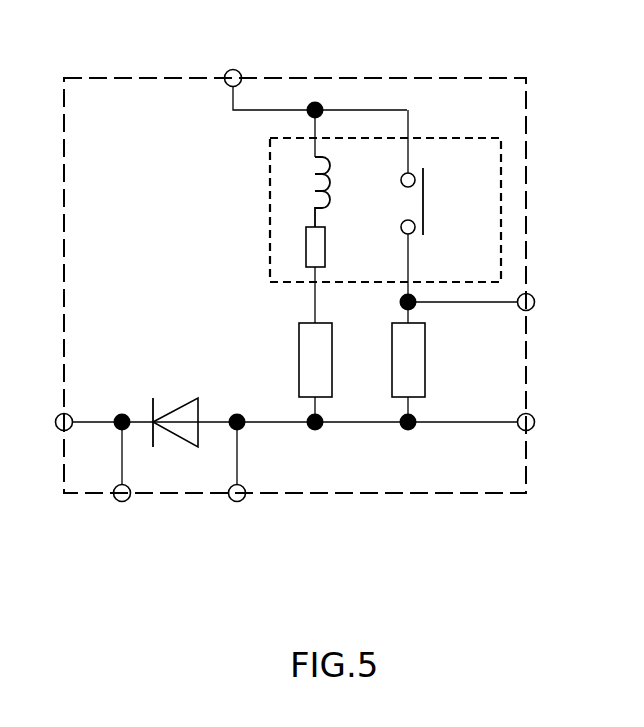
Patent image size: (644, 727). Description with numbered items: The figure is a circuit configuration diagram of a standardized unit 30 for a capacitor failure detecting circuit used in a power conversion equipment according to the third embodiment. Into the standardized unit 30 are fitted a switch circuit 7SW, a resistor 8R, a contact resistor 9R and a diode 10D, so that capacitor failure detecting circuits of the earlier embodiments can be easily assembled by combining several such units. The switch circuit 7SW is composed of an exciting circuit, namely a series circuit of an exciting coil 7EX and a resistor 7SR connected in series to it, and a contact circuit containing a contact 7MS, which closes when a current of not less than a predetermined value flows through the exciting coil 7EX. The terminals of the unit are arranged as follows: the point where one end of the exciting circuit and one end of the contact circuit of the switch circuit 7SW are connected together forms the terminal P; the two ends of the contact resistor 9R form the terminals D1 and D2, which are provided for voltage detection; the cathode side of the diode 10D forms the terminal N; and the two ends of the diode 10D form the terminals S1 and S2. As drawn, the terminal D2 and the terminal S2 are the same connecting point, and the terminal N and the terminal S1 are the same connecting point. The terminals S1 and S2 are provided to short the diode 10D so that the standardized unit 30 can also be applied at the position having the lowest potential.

The standardized unit 30 is at (370, 78).
The switch circuit 7SW is at (425, 138).
The exciting coil 7EX is at (338, 180).
The resistor 7SR is at (325, 248).
The contact 7MS is at (424, 200).
The resistor 8R is at (299, 357).
The contact resistor 9R is at (425, 352).
The diode 10D is at (178, 405).
The terminal P is at (316, 71).
The terminal N is at (272, 423).
The terminal D1 is at (497, 303).
The terminal D2 is at (552, 423).
The terminal S1 is at (122, 482).
The terminal S2 is at (237, 482).